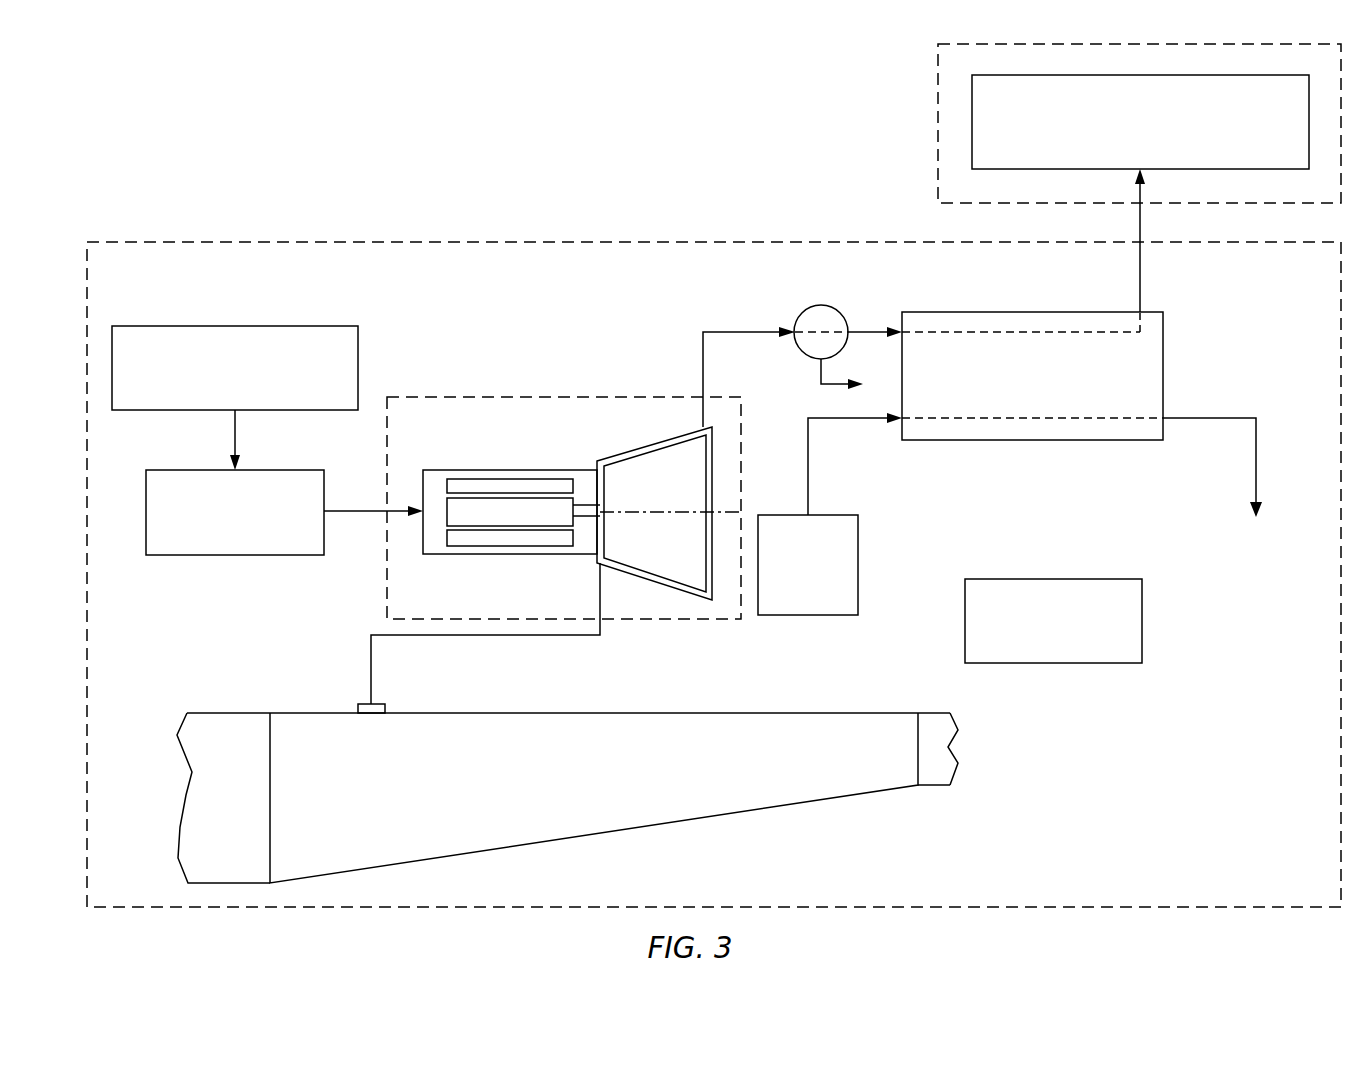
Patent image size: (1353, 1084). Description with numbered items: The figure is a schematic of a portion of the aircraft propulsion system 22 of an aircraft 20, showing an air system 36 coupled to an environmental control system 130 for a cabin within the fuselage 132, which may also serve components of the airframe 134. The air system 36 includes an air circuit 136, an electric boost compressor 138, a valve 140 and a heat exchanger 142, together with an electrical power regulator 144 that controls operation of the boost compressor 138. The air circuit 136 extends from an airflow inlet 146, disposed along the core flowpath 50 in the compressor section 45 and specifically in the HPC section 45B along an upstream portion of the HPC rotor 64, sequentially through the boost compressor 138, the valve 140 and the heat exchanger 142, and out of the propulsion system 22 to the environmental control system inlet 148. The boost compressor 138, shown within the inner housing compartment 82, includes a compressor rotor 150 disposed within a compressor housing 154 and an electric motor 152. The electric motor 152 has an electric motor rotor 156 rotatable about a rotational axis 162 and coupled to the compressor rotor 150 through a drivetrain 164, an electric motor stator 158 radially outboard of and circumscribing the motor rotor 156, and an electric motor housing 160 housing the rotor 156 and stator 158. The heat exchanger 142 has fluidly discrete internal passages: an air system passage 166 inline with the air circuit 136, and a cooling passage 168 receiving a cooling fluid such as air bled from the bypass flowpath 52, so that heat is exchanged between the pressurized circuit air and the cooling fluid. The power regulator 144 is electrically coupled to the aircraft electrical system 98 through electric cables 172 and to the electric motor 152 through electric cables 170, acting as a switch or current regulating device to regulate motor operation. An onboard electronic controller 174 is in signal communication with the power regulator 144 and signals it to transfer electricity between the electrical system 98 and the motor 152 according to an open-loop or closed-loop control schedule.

The aircraft 20 is at (108, 151).
The aircraft propulsion system 22 is at (147, 173).
The air system 36 is at (561, 280).
The fuselage 132 is at (1065, 123).
The airframe 134 is at (938, 108).
The environmental control system 130 is at (1122, 152).
The environmental control system inlet 148 is at (1142, 172).
The heat exchanger 142 is at (1165, 370).
The air system passage 166 is at (1020, 331).
The cooling passage 168 is at (1005, 420).
The valve 140 is at (820, 306).
The air circuit 136 is at (680, 357).
The bypass flowpath 52 is at (795, 579).
The aircraft electrical system 98 is at (223, 396).
The electric cables 172 is at (232, 437).
The electrical power regulator 144 is at (217, 540).
The electric cables 170 is at (345, 513).
The electric boost compressor 138 is at (568, 405).
The inner housing compartment 82 is at (437, 438).
The electric motor 152 is at (467, 504).
The electric motor housing 160 is at (475, 470).
The electric motor stator 158 is at (447, 486).
The electric motor rotor 156 is at (447, 518).
The drivetrain 164 is at (590, 504).
The rotational axis 162 is at (622, 515).
The compressor rotor 150 is at (708, 467).
The compressor housing 154 is at (712, 490).
The airflow inlet 146 is at (386, 704).
The electronic controller 174 is at (1035, 650).
The compressor section 45 is at (540, 772).
The HPC section 45B is at (684, 698).
The HPC rotor 64 is at (583, 794).
The core flowpath 50 is at (198, 793).